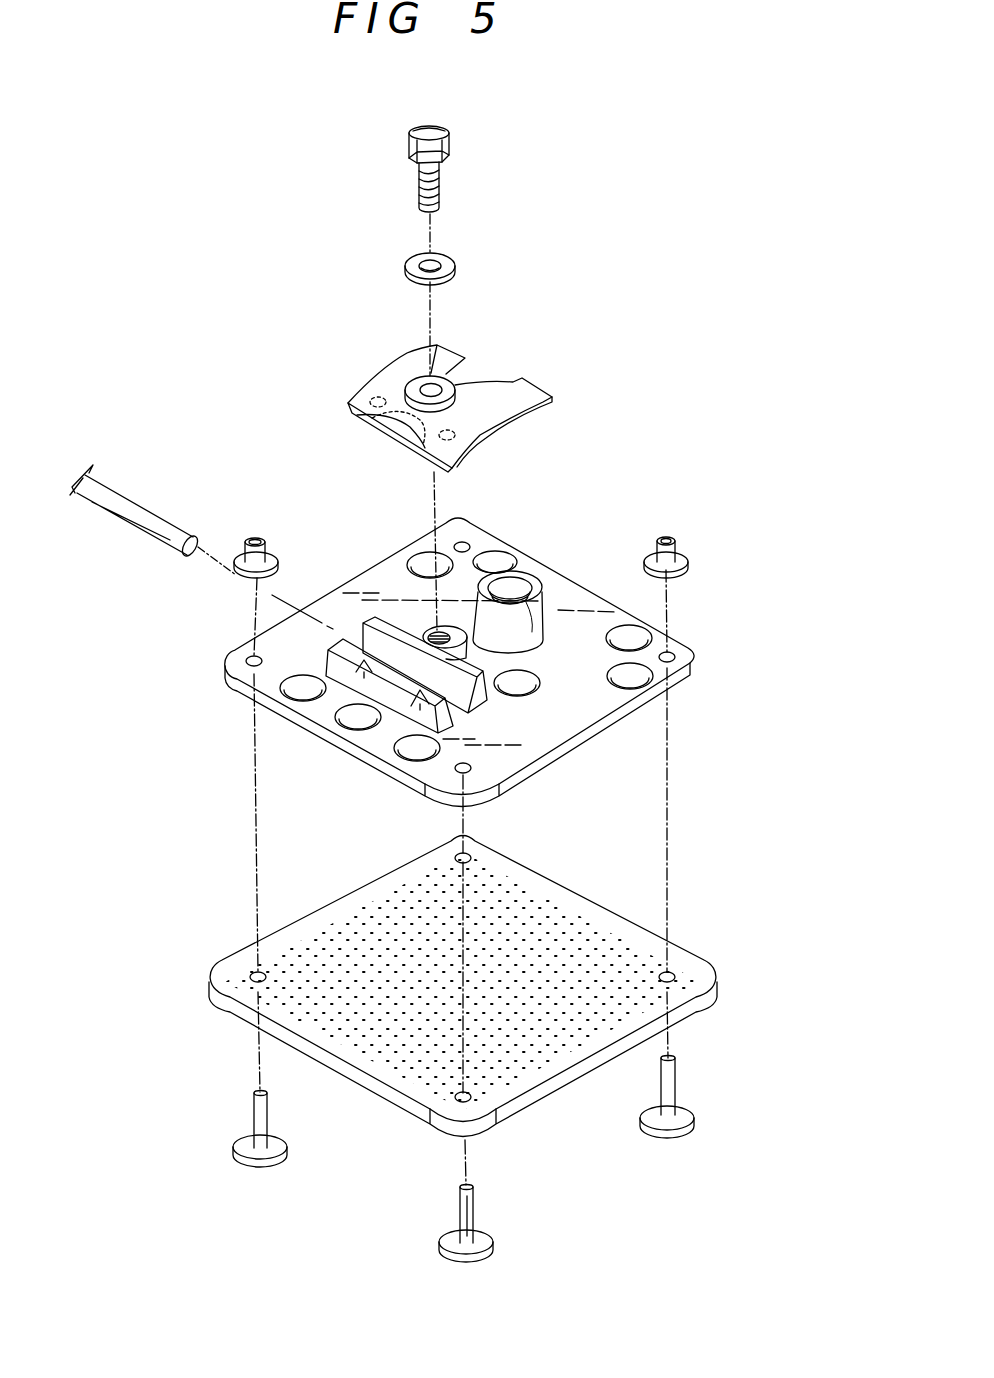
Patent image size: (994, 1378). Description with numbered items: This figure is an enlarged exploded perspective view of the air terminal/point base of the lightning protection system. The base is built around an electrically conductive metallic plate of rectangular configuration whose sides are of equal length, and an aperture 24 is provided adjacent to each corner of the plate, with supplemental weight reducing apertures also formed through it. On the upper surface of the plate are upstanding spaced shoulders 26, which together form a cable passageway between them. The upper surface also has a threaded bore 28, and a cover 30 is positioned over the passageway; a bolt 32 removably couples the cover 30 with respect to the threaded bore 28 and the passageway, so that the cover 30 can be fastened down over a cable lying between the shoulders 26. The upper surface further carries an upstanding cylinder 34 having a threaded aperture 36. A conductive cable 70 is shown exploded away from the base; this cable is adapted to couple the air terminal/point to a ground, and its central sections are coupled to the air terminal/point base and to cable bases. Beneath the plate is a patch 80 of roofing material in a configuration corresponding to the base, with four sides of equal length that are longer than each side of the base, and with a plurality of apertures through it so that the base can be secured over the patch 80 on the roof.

The aperture 24 is at (468, 542).
The upstanding spaced shoulders 26 is at (340, 692).
The threaded bore 28 is at (433, 632).
The cover 30 is at (517, 388).
The bolt 32 is at (457, 152).
The upstanding cylinder 34 is at (533, 613).
The threaded aperture 36 is at (520, 578).
The conductive cable 70 is at (160, 518).
The patch 80 is at (605, 902).